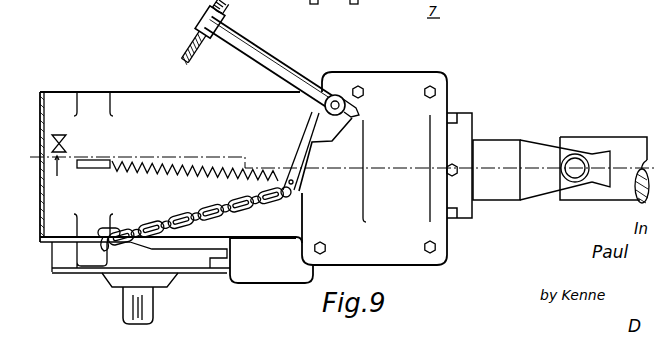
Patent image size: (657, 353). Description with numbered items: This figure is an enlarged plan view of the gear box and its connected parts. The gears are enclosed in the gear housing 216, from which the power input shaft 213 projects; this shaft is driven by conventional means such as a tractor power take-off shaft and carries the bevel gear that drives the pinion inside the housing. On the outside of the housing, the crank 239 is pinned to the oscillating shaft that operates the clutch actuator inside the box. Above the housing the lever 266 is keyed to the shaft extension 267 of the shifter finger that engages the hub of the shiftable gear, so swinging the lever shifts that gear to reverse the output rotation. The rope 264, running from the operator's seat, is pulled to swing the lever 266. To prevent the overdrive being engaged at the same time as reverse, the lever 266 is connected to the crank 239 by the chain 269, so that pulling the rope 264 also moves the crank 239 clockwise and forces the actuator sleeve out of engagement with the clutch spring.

The power input shaft 213 is at (153, 320).
The gear housing 216 is at (212, 93).
The crank 239 is at (184, 252).
The rope 264 is at (188, 54).
The lever 266 is at (276, 60).
The shaft extension 267 is at (311, 109).
The chain 269 is at (160, 203).